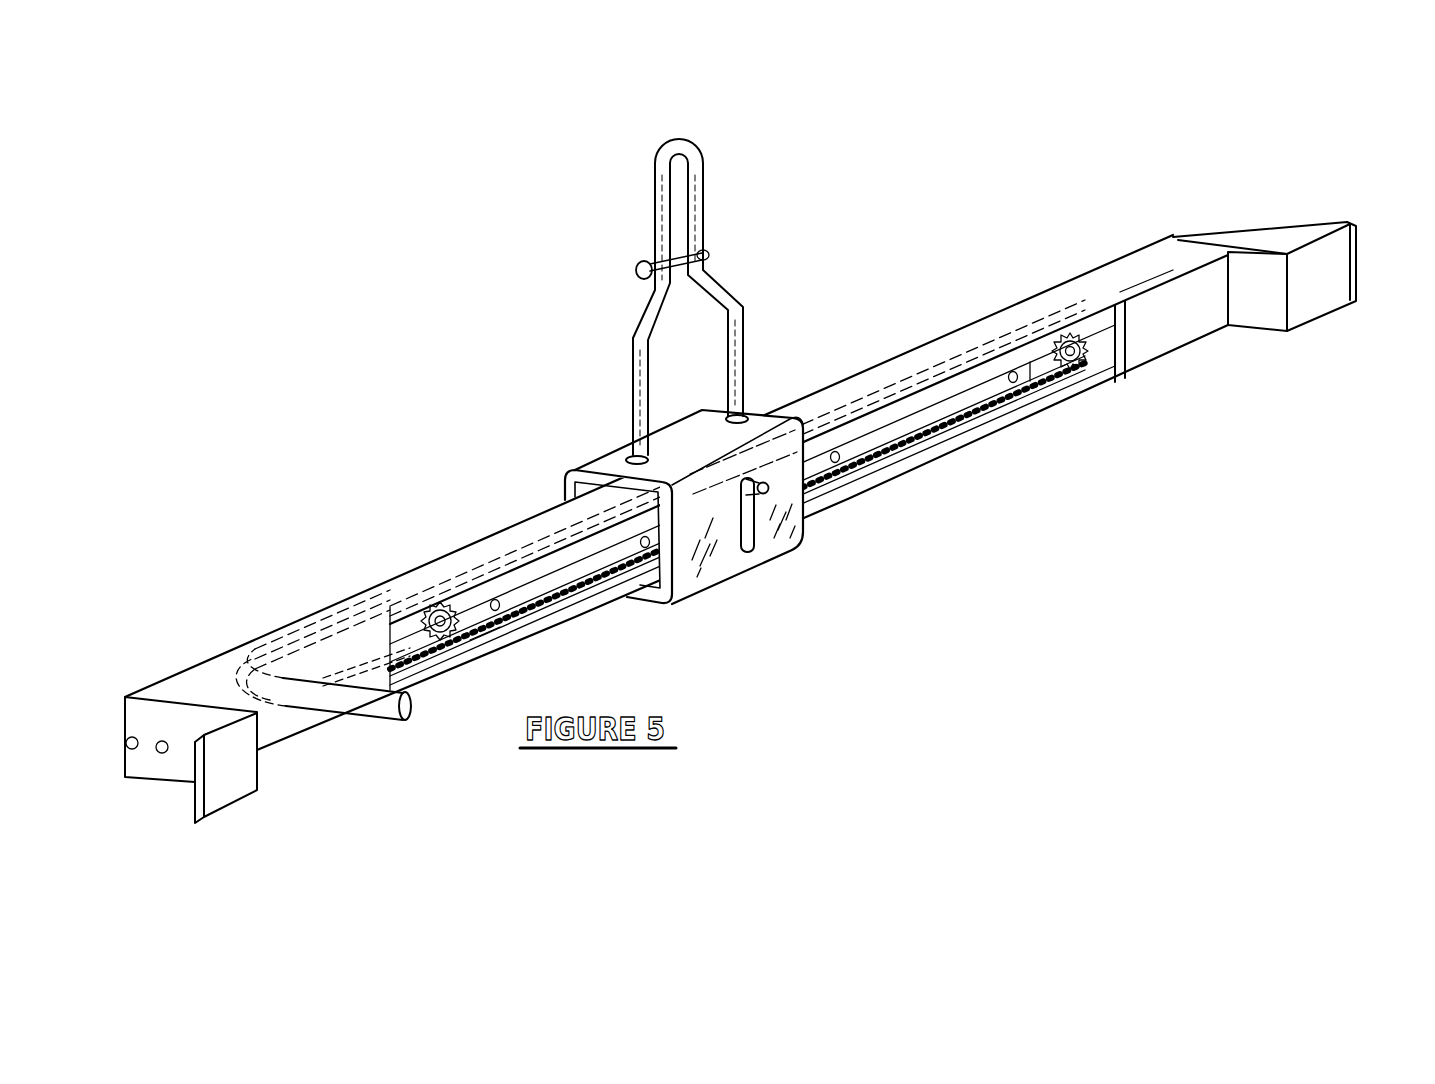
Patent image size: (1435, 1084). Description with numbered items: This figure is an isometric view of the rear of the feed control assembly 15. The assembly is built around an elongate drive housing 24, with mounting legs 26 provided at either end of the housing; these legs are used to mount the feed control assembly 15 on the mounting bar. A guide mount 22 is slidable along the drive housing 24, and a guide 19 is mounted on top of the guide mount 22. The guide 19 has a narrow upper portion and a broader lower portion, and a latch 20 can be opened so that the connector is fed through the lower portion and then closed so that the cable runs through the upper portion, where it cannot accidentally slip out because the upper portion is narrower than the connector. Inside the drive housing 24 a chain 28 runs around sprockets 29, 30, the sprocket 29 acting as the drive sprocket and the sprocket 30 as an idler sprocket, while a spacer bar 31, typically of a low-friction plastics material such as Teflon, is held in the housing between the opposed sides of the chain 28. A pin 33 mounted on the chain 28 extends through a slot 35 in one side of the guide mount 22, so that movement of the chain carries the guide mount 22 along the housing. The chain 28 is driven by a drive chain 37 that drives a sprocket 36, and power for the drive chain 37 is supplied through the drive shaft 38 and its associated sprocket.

The feed control assembly 15 is at (1208, 377).
The guide 19 is at (702, 190).
The latch 20 is at (640, 265).
The guide mount 22 is at (606, 464).
The drive housing 24 is at (1073, 298).
The mounting legs 26 is at (230, 793).
The chain 28 is at (998, 413).
The sprocket 29 is at (494, 630).
The sprocket 30 is at (1097, 380).
The spacer bar 31 is at (917, 422).
The pin 33 is at (766, 494).
The slot 35 is at (750, 537).
The sprocket 36 is at (402, 625).
The drive chain 37 is at (297, 642).
The drive shaft 38 is at (367, 711).